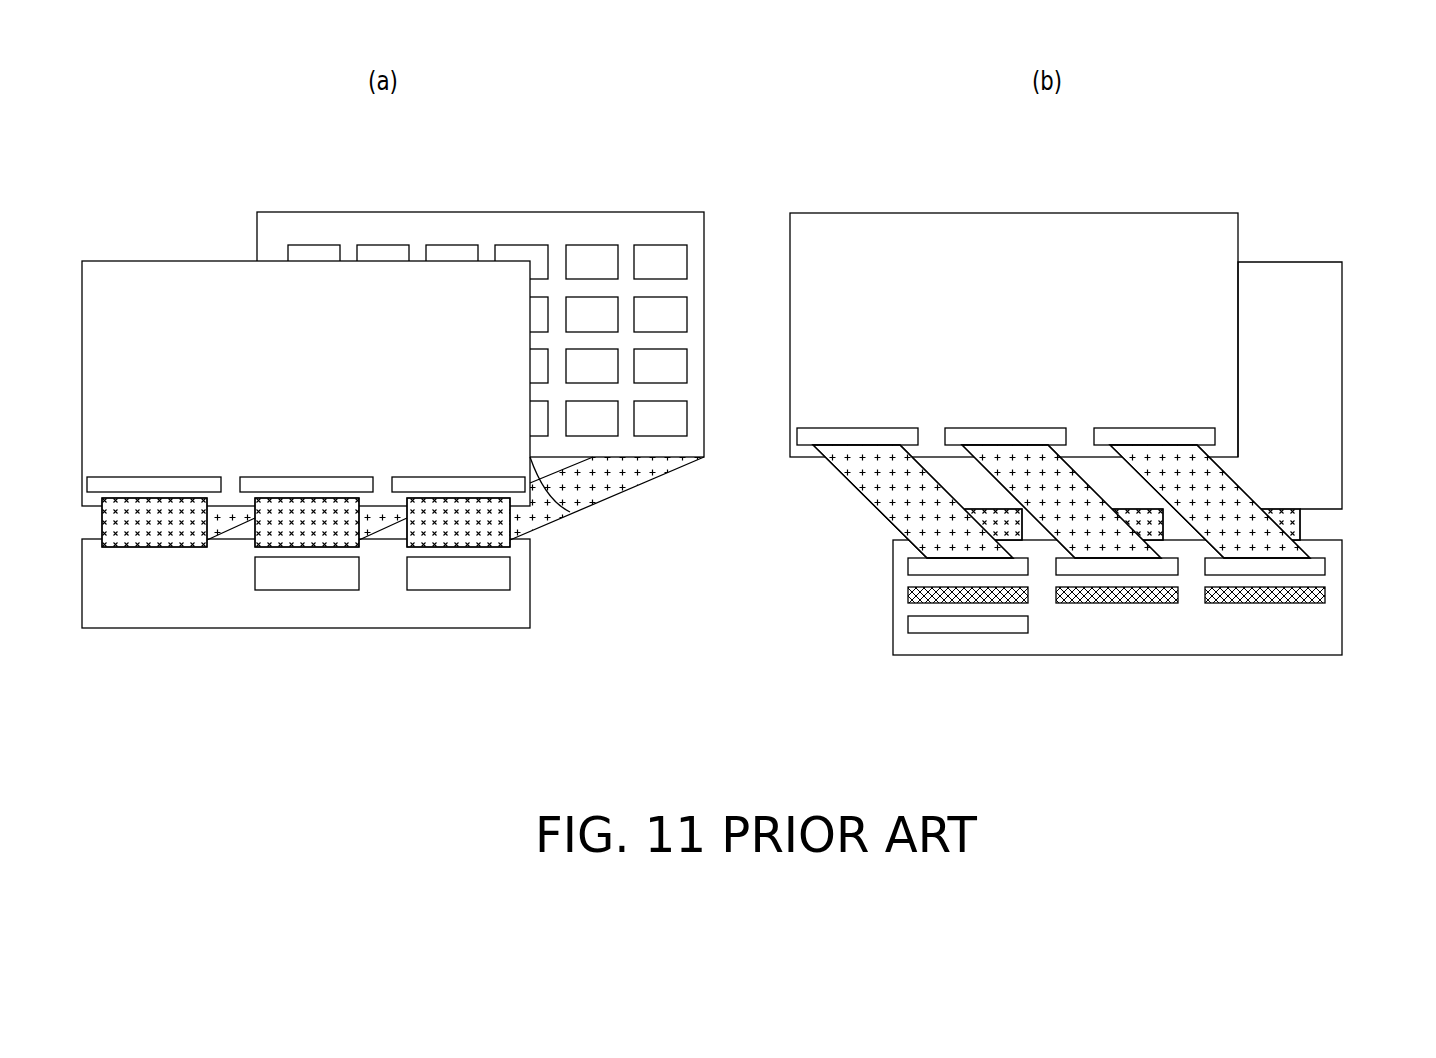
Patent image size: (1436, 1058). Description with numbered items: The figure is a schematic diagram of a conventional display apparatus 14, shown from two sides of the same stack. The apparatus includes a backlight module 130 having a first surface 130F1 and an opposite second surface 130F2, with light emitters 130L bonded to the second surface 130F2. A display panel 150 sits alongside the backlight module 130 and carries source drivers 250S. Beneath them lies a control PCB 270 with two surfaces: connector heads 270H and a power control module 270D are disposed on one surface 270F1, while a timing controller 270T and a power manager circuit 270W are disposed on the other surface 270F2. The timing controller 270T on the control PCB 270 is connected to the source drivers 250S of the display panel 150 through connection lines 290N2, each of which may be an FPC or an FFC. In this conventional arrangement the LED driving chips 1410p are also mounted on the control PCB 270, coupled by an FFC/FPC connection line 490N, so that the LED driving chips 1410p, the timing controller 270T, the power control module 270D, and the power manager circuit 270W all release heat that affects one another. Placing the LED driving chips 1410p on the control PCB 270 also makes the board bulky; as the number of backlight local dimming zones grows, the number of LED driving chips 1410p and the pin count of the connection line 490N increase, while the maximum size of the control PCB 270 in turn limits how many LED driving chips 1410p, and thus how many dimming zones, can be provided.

The conventional display apparatus 14 is at (152, 112).
The backlight module 130 is at (747, 271).
The second surface of the backlight module 130F2 is at (665, 220).
The first surface of the backlight module 130F1 is at (1013, 299).
The light emitters 130L is at (315, 252).
The display panel 150 is at (140, 268).
The source drivers 250S is at (152, 480).
The control PCB 270 is at (712, 656).
The surface of the control PCB 270F2 is at (522, 602).
The surface of the control PCB 270F1 is at (1058, 630).
The timing controller 270T is at (273, 585).
The power manager circuit 270W is at (425, 585).
The connector heads 270H is at (917, 567).
The power control module 270D is at (943, 625).
The connection lines 290N2 is at (150, 541).
The FFC/FPC connection line 490N is at (225, 527).
The LED driving chips 1410p is at (983, 600).